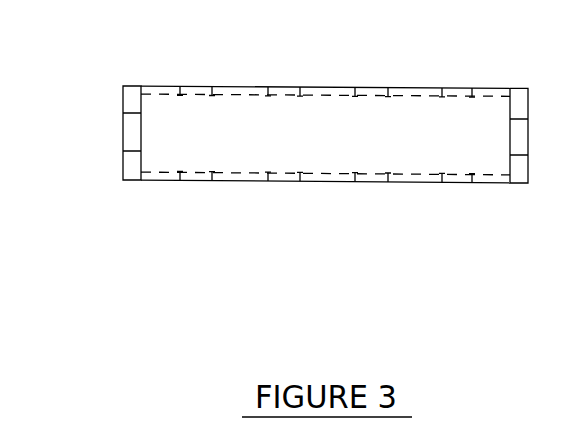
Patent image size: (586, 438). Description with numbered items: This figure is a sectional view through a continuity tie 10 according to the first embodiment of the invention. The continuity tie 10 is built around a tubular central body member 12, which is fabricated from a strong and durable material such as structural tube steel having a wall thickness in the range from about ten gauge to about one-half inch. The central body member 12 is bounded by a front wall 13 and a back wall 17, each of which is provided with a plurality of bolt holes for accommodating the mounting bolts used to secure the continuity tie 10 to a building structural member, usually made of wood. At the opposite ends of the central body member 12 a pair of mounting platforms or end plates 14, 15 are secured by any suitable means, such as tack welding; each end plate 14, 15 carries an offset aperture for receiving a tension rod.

The continuity tie 10 is at (298, 144).
The tubular central body member 12 is at (260, 125).
The front wall 13 is at (413, 183).
The end plate 14 is at (122, 167).
The end plate 15 is at (528, 105).
The back wall 17 is at (408, 88).